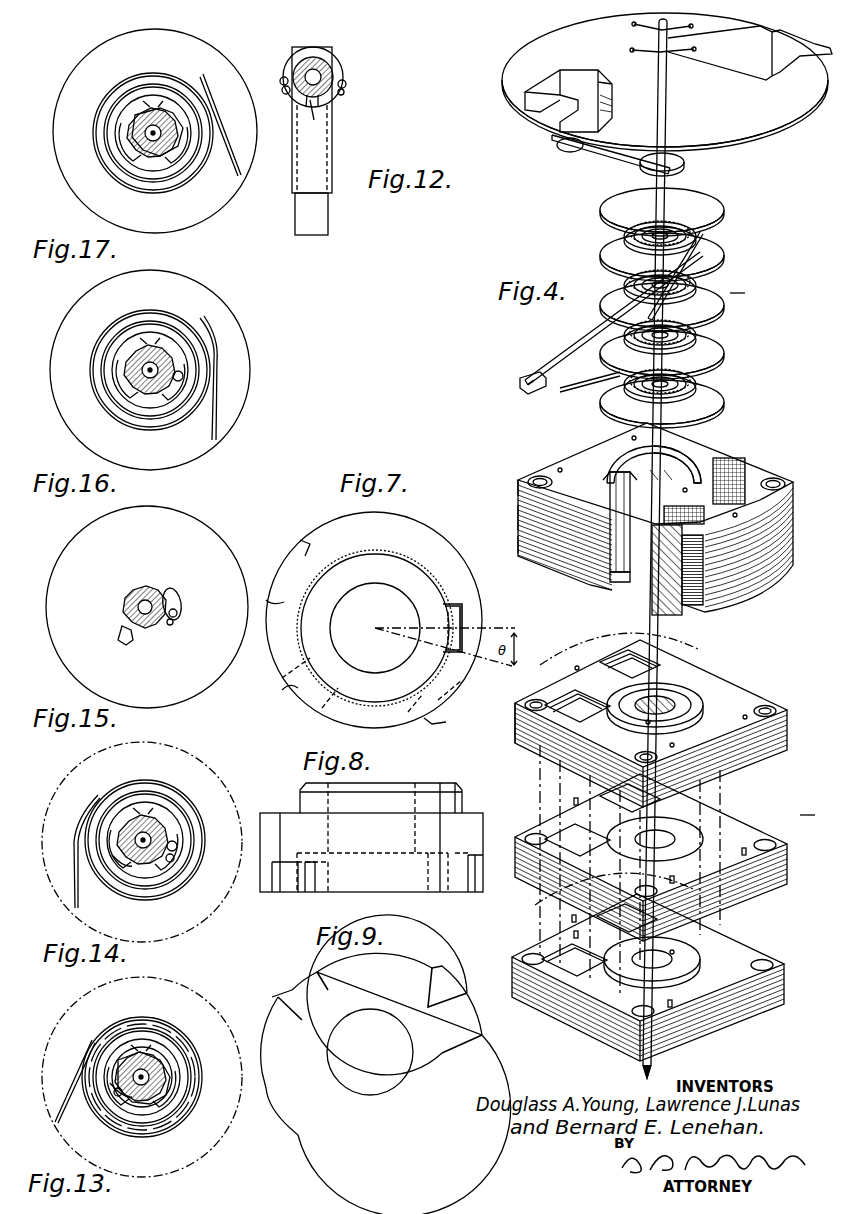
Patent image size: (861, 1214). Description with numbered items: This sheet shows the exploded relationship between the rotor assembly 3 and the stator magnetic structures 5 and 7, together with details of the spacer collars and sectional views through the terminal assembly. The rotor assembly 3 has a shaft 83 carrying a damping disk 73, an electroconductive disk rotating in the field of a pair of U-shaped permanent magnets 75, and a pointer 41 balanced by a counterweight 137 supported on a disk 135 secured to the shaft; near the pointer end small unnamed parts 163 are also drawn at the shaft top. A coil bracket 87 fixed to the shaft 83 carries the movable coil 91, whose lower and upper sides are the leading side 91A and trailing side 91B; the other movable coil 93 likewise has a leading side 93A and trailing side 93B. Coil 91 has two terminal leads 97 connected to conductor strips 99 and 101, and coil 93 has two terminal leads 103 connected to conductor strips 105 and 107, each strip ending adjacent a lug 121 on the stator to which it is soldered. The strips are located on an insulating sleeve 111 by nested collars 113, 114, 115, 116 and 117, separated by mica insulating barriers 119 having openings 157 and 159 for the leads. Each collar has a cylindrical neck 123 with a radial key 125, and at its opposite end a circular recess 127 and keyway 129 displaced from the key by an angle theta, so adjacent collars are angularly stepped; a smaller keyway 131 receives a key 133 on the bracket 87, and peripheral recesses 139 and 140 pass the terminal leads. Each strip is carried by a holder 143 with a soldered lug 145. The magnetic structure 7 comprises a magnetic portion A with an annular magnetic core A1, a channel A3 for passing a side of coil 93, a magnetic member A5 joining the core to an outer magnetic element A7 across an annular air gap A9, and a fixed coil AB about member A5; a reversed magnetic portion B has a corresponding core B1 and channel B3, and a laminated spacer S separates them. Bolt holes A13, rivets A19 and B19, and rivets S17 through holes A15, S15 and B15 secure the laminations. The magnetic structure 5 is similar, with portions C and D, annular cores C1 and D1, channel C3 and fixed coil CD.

In FIG. 4, the rotor assembly 3 is at (737, 285).
In FIG. 4, the magnetic structure 5 is at (812, 511).
In FIG. 4, the magnetic structure 7 is at (807, 807).
In FIG. 4, the pointer 41 is at (735, 72).
In FIG. 4, the damping disk 73 is at (535, 130).
In FIG. 4, the U-shaped permanent magnets 75 is at (572, 70).
In FIG. 4, the shaft 83 is at (658, 635).
In FIG. 12, the coil bracket 87 is at (333, 143).
In FIG. 12, the coil 91 is at (322, 228).
In FIG. 4, the coil 91 is at (610, 500).
In FIG. 4, the leading side 91A is at (610, 578).
In FIG. 4, the trailing side 91B is at (610, 482).
In FIG. 4, the coil 93 is at (690, 800).
In FIG. 4, the leading side 93A is at (680, 1045).
In FIG. 4, the trailing side 93B is at (682, 668).
In FIG. 12, the terminal leads 97 is at (282, 90).
In FIG. 13, the conductor strip 99 is at (195, 1110).
In FIG. 14, the conductor strip 101 is at (188, 889).
In FIG. 4, the conductor strip 101 is at (600, 332).
In FIG. 12, the terminal leads 103 is at (347, 84).
In FIG. 16, the conductor strip 105 is at (104, 328).
In FIG. 4, the conductor strip 105 is at (610, 282).
In FIG. 17, the conductor strip 107 is at (112, 84).
In FIG. 4, the conductor strip 107 is at (612, 240).
In FIG. 17, the insulating sleeve 111 is at (140, 137).
In FIG. 16, the insulating sleeve 111 is at (138, 376).
In FIG. 15, the insulating sleeve 111 is at (140, 590).
In FIG. 14, the insulating sleeve 111 is at (130, 818).
In FIG. 13, the insulating sleeve 111 is at (162, 1075).
In FIG. 12, the insulating sleeve 111 is at (298, 60).
In FIG. 13, the collar 113 is at (168, 1068).
In FIG. 12, the collar 113 is at (340, 60).
In FIG. 7, the collar 113 is at (335, 533).
In FIG. 14, the collar 114 is at (162, 818).
In FIG. 15, the collar 115 is at (158, 594).
In FIG. 16, the collar 116 is at (160, 348).
In FIG. 17, the collar 117 is at (172, 122).
In FIG. 16, the insulating barrier 119 is at (246, 350).
In FIG. 15, the insulating barrier 119 is at (70, 682).
In FIG. 4, the insulating barrier 119 is at (720, 200).
In FIG. 4, the lug 121 is at (540, 392).
In FIG. 8, the cylindrical neck 123 is at (300, 800).
In FIG. 13, the key 125 is at (152, 1060).
In FIG. 7, the key 125 is at (450, 608).
In FIG. 8, the key 125 is at (462, 798).
In FIG. 9, the circular recess 127 is at (368, 1120).
In FIG. 7, the keyway 129 is at (450, 686).
In FIG. 8, the keyway 129 is at (472, 892).
In FIG. 9, the keyway 129 is at (470, 1035).
In FIG. 7, the keyway 131 is at (288, 680).
In FIG. 8, the keyway 131 is at (285, 895).
In FIG. 9, the keyway 131 is at (308, 975).
In FIG. 12, the key 133 is at (322, 108).
In FIG. 4, the disk 135 is at (688, 162).
In FIG. 4, the counterweight 137 is at (566, 155).
In FIG. 12, the peripheral recess 139 is at (283, 76).
In FIG. 7, the peripheral recess 139 is at (302, 580).
In FIG. 12, the peripheral recess 140 is at (328, 97).
In FIG. 7, the peripheral recess 140 is at (410, 726).
In FIG. 13, the holder 143 is at (136, 1050).
In FIG. 14, the lug 145 is at (112, 858).
In FIG. 13, the lug 145 is at (110, 1085).
In FIG. 15, the opening 157 is at (122, 636).
In FIG. 15, the opening 159 is at (180, 618).
In FIG. 4, the spring wires 163 is at (670, 40).
In FIG. 4, the magnetic portion A is at (525, 700).
In FIG. 4, the annular magnetic core A1 is at (692, 700).
In FIG. 4, the channel A3 is at (648, 668).
In FIG. 4, the magnetic member A5 is at (582, 690).
In FIG. 4, the outer magnetic element A7 is at (520, 710).
In FIG. 4, the annular air gap A9 is at (703, 708).
In FIG. 4, the holes A13 is at (772, 704).
In FIG. 4, the holes A15 is at (574, 668).
In FIG. 4, the rivets A19 is at (655, 724).
In FIG. 4, the fixed coil AB is at (550, 906).
In FIG. 4, the magnetic portion B is at (515, 965).
In FIG. 4, the annular magnetic core B1 is at (700, 950).
In FIG. 4, the channel B3 is at (600, 962).
In FIG. 4, the holes B15 is at (572, 918).
In FIG. 4, the rivets B19 is at (676, 955).
In FIG. 4, the magnetic portion C is at (517, 490).
In FIG. 4, the annular magnetic core C1 is at (615, 456).
In FIG. 4, the channel C3 is at (700, 455).
In FIG. 4, the fixed coil CD is at (740, 466).
In FIG. 4, the magnetic portion D is at (517, 545).
In FIG. 4, the annular magnetic core D1 is at (645, 575).
In FIG. 4, the magnetic structure (spacer) S is at (517, 516).
In FIG. 4, the holes S15 is at (572, 802).
In FIG. 4, the rivets S17 is at (574, 800).